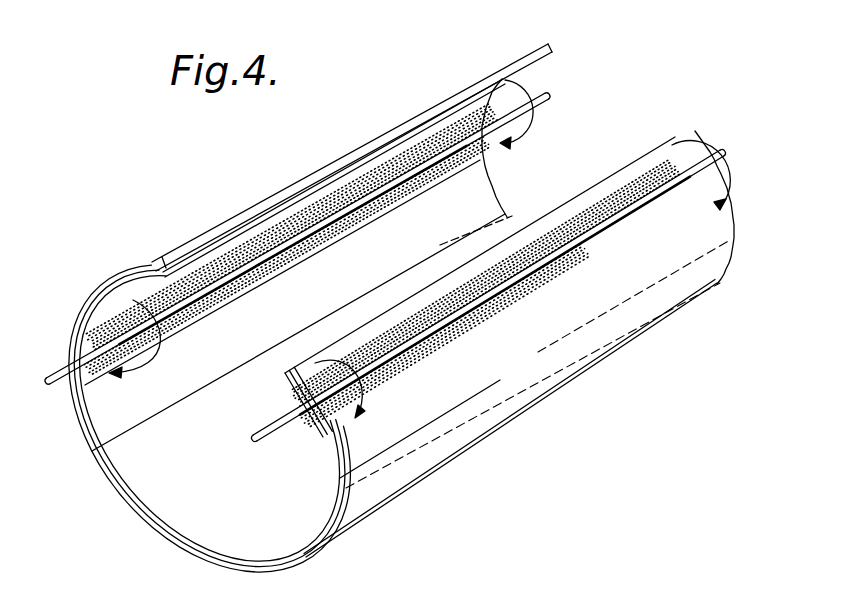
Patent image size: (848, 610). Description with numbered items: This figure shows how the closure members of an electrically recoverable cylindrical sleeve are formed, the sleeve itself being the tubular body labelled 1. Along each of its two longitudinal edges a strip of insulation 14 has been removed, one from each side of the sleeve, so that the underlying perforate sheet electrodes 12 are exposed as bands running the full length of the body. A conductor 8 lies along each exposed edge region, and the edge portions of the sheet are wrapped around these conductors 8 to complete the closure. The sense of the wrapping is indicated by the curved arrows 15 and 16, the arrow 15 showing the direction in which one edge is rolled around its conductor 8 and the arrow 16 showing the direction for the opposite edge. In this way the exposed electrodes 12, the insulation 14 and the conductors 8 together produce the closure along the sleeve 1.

The tubular body 1 is at (498, 402).
The conductors 8 is at (50, 376).
The perforate sheet electrodes 12 is at (410, 166).
The strips of insulation 14 is at (292, 227).
The arrow 15 is at (541, 131).
The arrow 16 is at (693, 143).